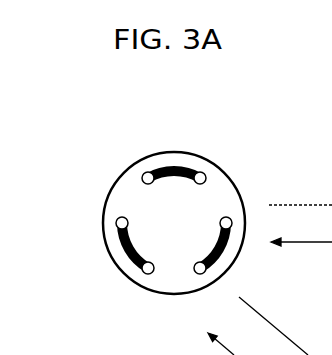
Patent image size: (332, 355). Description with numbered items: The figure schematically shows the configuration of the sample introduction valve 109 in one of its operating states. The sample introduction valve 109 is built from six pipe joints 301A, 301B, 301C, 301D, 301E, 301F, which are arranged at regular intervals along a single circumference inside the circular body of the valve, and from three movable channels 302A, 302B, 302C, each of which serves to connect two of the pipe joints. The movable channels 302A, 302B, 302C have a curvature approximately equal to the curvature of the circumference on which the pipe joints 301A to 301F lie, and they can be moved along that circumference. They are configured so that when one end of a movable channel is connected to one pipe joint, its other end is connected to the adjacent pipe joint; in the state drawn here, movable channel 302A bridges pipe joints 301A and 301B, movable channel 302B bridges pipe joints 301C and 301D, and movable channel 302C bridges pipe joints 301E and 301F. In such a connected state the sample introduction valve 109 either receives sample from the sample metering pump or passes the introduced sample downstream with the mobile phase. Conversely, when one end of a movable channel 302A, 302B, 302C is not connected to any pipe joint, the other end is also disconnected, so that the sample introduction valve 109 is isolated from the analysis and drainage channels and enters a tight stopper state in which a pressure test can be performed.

The sample introduction valve 109 is at (113, 186).
The pipe joint 301A is at (146, 171).
The pipe joint 301B is at (207, 179).
The pipe joint 301C is at (232, 218).
The pipe joint 301D is at (199, 275).
The pipe joint 301E is at (148, 275).
The pipe joint 301F is at (116, 222).
The movable channel 302A is at (181, 163).
The movable channel 302B is at (235, 256).
The movable channel 302C is at (121, 252).